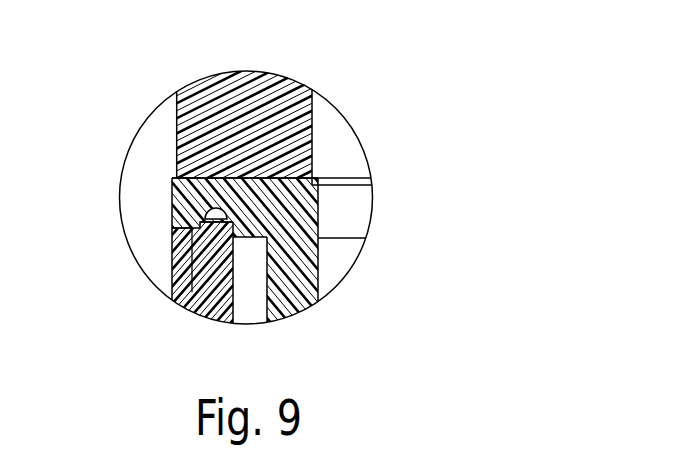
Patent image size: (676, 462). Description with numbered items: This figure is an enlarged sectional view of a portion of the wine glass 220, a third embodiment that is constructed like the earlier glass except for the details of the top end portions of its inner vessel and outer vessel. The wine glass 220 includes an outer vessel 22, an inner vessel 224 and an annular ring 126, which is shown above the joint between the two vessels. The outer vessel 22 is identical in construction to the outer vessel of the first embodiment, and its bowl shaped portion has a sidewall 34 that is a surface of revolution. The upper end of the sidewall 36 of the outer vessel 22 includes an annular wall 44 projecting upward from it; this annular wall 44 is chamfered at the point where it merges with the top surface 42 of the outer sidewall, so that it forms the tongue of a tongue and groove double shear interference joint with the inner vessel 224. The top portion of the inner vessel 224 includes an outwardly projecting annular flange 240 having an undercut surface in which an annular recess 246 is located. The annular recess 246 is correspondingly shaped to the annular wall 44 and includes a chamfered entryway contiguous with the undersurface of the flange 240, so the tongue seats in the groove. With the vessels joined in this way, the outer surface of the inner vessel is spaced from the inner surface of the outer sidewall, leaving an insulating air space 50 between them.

The outer vessel 22 is at (165, 276).
The sidewall 34 is at (173, 255).
The sidewall 36 is at (318, 259).
The top surface 42 is at (185, 296).
The annular wall 44 is at (197, 225).
The insulating air space 50 is at (247, 302).
The annular ring 126 is at (276, 86).
The wine glass 220 is at (336, 131).
The inner vessel 224 is at (324, 286).
The annular flange 240 is at (183, 183).
The annular recess 246 is at (216, 208).